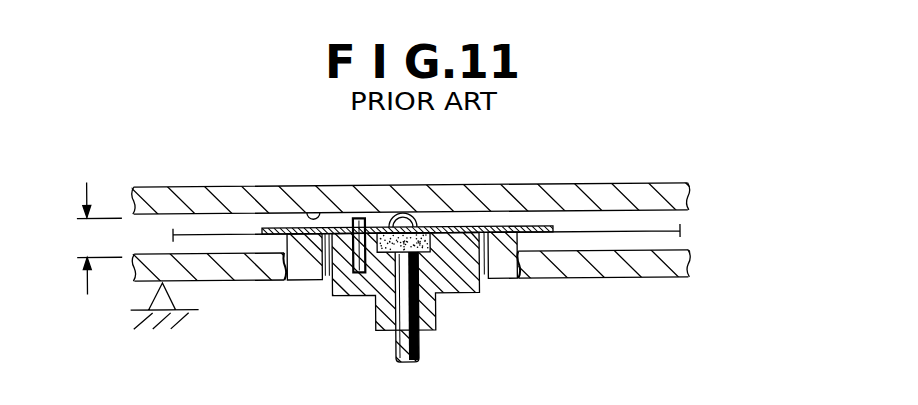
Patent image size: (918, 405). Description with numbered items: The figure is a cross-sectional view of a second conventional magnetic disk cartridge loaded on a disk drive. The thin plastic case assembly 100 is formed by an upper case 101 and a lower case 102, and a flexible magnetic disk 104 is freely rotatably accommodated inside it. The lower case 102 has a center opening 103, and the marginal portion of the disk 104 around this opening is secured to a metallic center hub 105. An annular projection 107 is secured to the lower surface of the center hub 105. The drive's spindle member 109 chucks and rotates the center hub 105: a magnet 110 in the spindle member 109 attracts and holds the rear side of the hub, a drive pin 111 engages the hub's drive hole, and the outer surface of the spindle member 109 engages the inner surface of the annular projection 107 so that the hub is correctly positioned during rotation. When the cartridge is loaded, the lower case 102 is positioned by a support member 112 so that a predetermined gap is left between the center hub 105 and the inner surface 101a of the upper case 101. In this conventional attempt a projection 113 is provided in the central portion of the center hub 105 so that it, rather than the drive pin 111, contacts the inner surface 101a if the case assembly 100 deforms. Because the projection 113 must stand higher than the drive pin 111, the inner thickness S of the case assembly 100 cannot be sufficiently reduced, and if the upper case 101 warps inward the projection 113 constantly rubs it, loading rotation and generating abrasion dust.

The case assembly 100 is at (766, 175).
The upper case 101 is at (675, 193).
The inner surface of the upper case 101a is at (310, 213).
The lower case 102 is at (675, 265).
The center opening 103 is at (287, 280).
The flexible magnetic disk 104 is at (217, 233).
The center hub 105 is at (512, 227).
The annular projection 107 is at (508, 279).
The spindle member 109 is at (366, 295).
The magnet 110 is at (430, 238).
The drive pin 111 is at (359, 272).
The support member 112 is at (152, 292).
The projection 113 is at (398, 214).
The inner thickness of the case assembly S is at (100, 238).